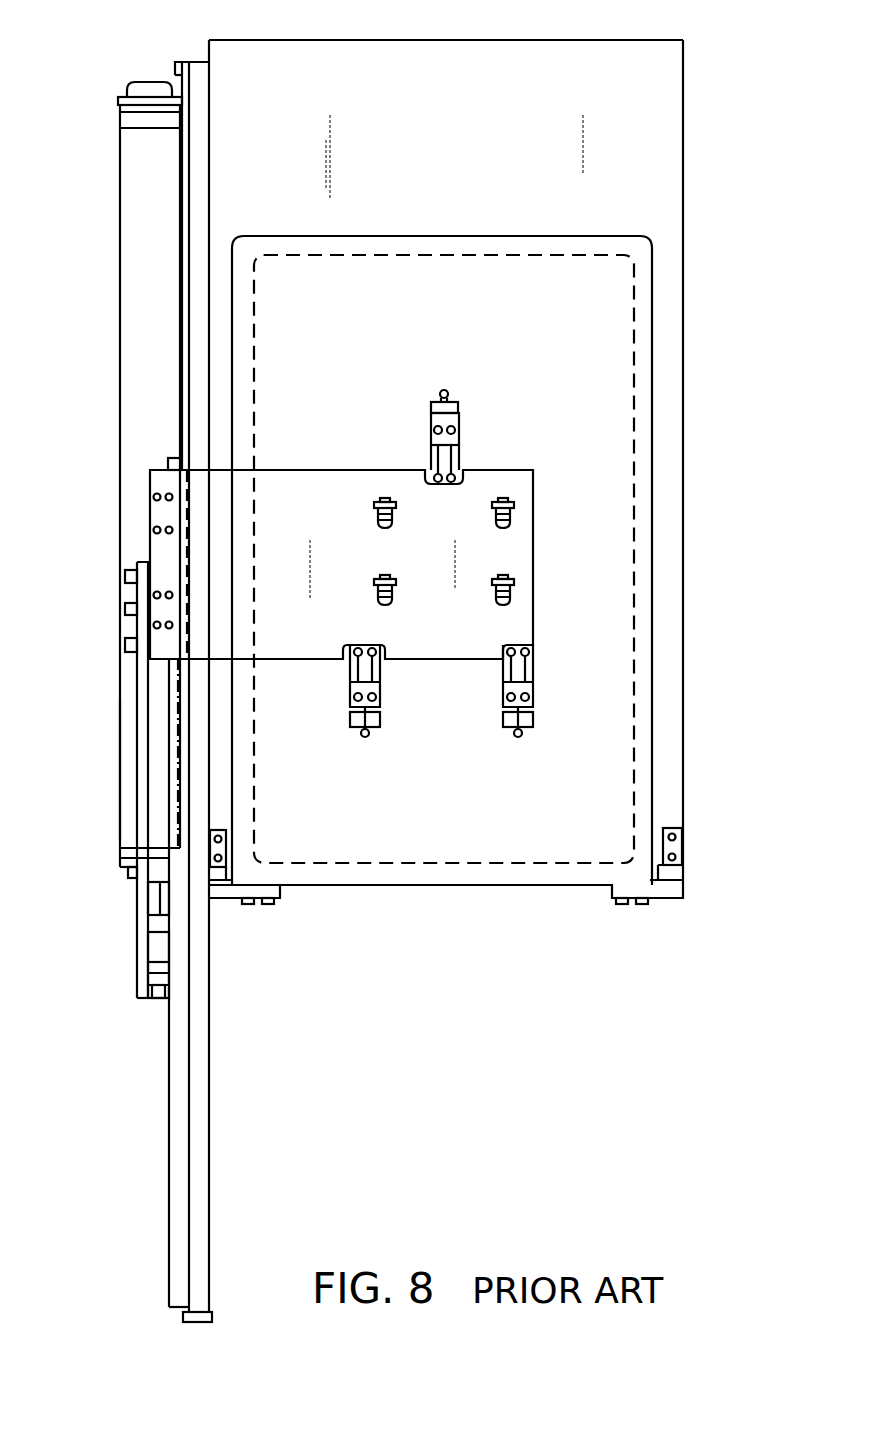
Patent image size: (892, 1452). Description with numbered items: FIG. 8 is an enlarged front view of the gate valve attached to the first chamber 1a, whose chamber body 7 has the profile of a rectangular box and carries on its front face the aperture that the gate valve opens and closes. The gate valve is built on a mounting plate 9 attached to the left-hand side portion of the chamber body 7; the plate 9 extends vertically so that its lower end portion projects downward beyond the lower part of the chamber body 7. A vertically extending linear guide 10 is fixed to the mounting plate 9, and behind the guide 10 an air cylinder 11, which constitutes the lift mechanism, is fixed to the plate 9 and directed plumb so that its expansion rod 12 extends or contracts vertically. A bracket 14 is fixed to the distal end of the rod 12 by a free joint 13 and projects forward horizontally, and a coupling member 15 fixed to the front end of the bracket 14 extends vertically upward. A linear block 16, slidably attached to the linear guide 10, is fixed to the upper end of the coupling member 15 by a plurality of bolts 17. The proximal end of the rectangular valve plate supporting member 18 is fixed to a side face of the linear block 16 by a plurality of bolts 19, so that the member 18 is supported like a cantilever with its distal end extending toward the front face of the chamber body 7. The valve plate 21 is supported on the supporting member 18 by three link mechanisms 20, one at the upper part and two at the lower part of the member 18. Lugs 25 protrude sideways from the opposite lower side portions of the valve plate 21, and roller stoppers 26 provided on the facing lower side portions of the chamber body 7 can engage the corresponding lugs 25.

The first chamber 1a is at (630, 39).
The chamber body 7 is at (685, 172).
The mounting plate 9 is at (195, 188).
The linear guide 10 is at (180, 1062).
The air cylinder 11 is at (130, 337).
The expansion rod 12 is at (150, 898).
The free joint 13 is at (155, 948).
The bracket 14 is at (155, 1000).
The coupling member 15 is at (140, 768).
The linear block 16 is at (187, 553).
The bolts 17 is at (137, 608).
The valve plate supporting member 18 is at (512, 545).
The bolts 19 is at (152, 494).
The link mechanisms 20 is at (462, 418).
The valve plate 21 is at (612, 432).
The lugs 25 is at (232, 902).
The roller stoppers 26 is at (227, 870).